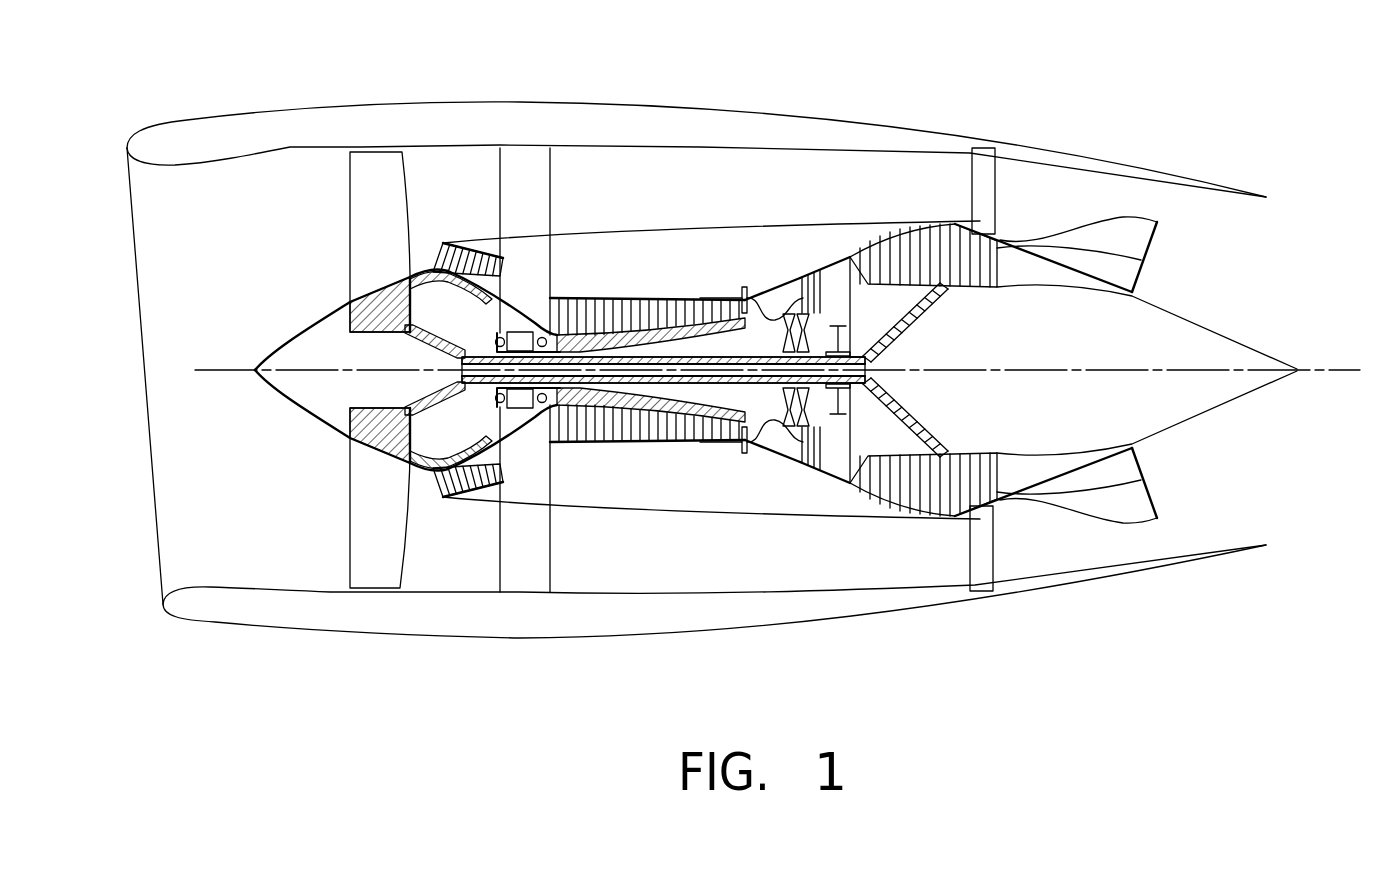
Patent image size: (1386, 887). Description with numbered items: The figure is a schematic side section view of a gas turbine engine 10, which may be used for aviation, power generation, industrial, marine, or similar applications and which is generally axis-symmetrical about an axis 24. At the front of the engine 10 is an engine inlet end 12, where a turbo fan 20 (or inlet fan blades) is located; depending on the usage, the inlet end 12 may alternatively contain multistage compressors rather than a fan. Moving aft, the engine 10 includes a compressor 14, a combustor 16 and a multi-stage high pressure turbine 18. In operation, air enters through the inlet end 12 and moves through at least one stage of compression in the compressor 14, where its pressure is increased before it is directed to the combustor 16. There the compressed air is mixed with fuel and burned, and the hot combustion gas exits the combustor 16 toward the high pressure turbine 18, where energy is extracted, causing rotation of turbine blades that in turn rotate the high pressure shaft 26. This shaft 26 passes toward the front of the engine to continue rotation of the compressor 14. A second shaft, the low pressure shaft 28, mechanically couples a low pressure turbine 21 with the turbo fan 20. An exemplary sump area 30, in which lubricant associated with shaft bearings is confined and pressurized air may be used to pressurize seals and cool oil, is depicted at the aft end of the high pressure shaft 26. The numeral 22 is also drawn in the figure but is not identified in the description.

The gas turbine engine 10 is at (1013, 85).
The engine inlet end 12 is at (200, 289).
The compressor 14 is at (598, 298).
The combustor 16 is at (764, 292).
The multi-stage high pressure turbine 18 is at (818, 278).
The turbo fan 20 is at (333, 192).
The low pressure turbine 21 is at (906, 518).
The low pressure turbine 22 is at (876, 302).
The axis 24 is at (1360, 368).
The high pressure shaft 26 is at (737, 313).
The low pressure shaft 28 is at (637, 398).
The sump area 30 is at (821, 418).